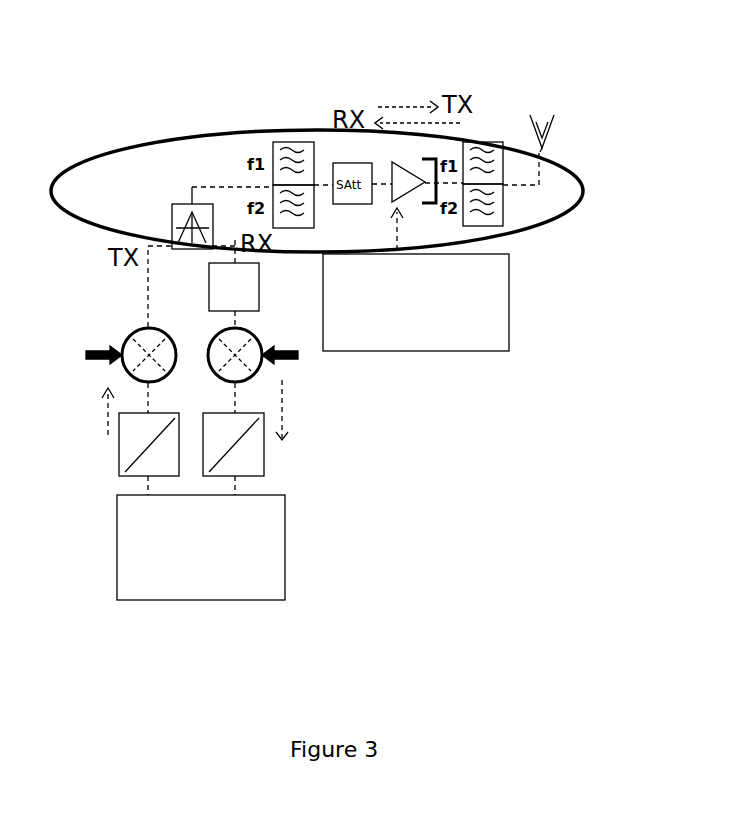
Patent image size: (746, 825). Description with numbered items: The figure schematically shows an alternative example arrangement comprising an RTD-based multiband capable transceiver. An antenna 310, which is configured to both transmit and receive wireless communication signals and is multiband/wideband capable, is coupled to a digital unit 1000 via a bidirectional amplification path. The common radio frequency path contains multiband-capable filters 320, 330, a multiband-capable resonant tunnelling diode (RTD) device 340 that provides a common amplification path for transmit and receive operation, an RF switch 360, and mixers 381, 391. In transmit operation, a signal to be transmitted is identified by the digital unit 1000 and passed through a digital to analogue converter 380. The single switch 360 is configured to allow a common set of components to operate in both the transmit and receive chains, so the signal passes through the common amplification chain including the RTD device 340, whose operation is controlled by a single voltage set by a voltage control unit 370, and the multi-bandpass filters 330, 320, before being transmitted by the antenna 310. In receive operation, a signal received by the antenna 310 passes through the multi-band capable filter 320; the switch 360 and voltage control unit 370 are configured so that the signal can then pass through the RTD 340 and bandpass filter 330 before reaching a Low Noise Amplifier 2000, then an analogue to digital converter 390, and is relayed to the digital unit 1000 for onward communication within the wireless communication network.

The antenna 310 is at (552, 140).
The multiband-capable filter 320 is at (487, 165).
The multiband-capable filter 330 is at (291, 165).
The resonant tunnelling diode (RTD) device 340 is at (406, 185).
The RF switch 360 is at (185, 222).
The voltage control unit 370 is at (416, 302).
The digital to analogue converter 380 is at (138, 450).
The mixer 381 is at (123, 370).
The analogue to digital converter 390 is at (257, 443).
The mixer 391 is at (253, 367).
The digital unit 1000 is at (201, 547).
The Low Noise Amplifier 2000 is at (218, 302).